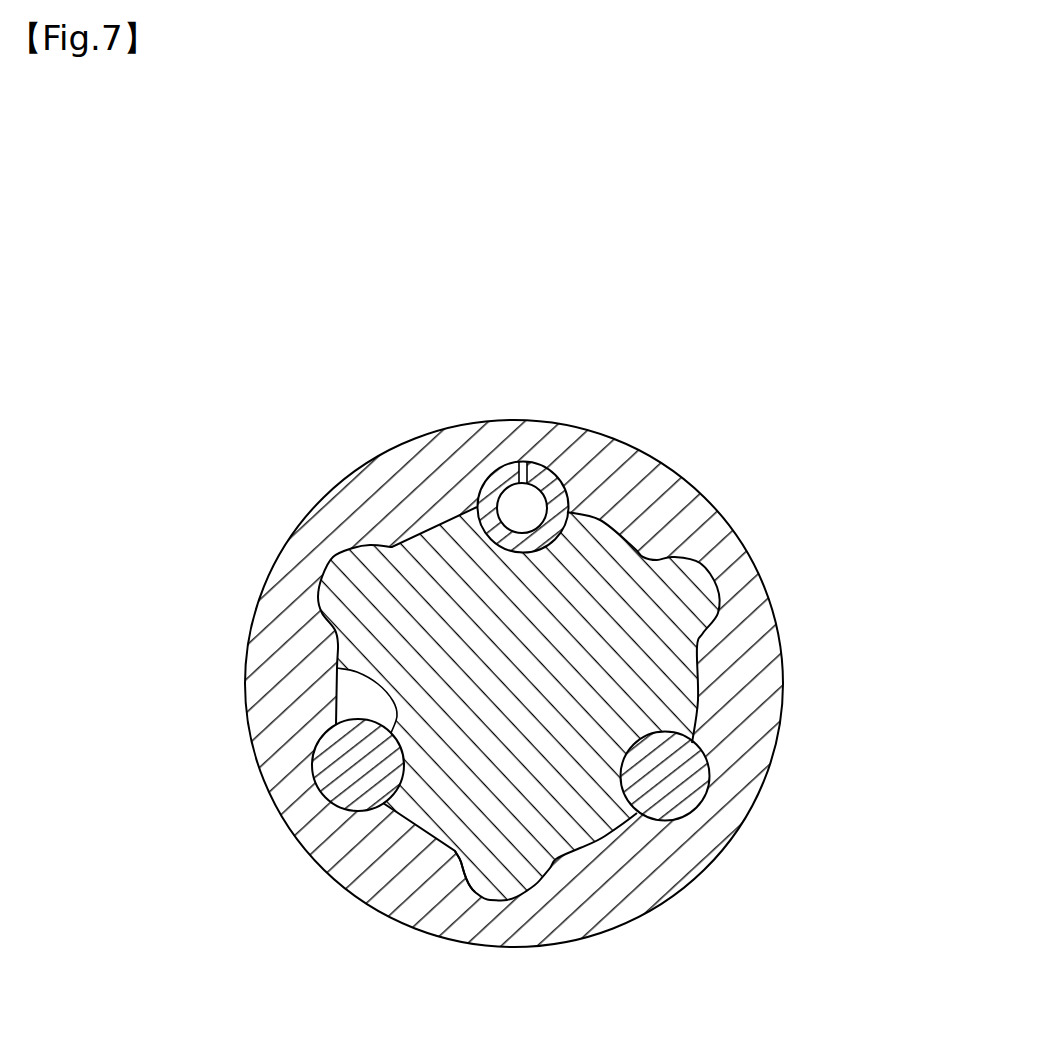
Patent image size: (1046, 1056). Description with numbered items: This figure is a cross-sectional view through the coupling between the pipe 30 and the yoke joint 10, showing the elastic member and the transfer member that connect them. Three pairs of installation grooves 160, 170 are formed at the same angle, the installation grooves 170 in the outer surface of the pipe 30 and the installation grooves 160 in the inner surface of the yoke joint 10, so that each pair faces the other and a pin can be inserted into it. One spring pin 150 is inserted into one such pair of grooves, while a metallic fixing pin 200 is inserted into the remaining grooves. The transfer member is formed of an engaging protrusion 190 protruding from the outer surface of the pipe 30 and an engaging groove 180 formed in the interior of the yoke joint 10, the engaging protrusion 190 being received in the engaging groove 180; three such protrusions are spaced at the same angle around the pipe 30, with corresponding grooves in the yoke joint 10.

The yoke joint 10 is at (667, 480).
The pipe 30 is at (620, 610).
The spring pin 150 is at (543, 480).
The installation groove 160 is at (337, 805).
The installation groove 170 is at (380, 682).
The engaging groove 180 is at (547, 873).
The engaging protrusion 190 is at (470, 880).
The metallic fixing pin 200 is at (677, 775).